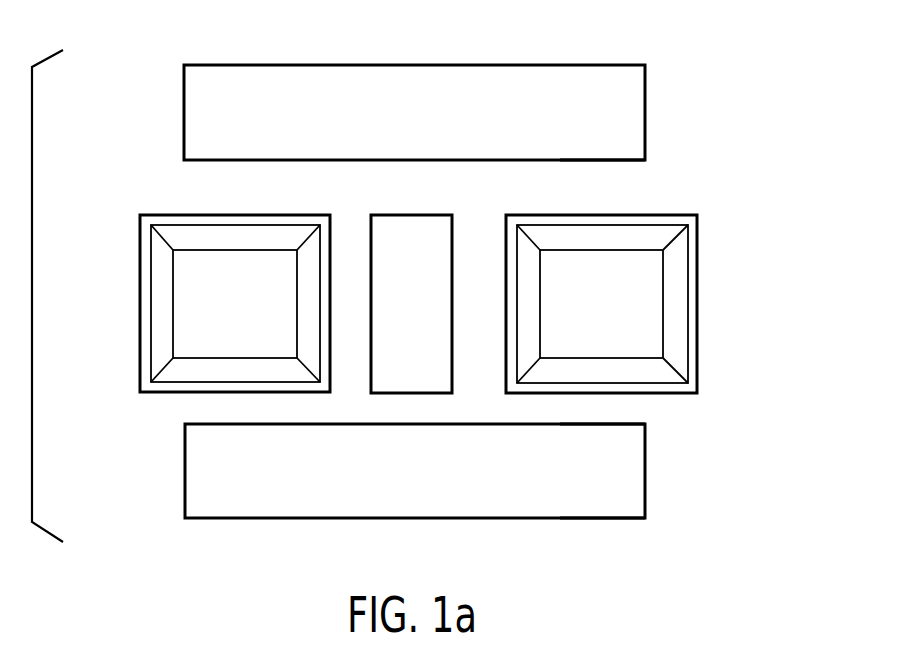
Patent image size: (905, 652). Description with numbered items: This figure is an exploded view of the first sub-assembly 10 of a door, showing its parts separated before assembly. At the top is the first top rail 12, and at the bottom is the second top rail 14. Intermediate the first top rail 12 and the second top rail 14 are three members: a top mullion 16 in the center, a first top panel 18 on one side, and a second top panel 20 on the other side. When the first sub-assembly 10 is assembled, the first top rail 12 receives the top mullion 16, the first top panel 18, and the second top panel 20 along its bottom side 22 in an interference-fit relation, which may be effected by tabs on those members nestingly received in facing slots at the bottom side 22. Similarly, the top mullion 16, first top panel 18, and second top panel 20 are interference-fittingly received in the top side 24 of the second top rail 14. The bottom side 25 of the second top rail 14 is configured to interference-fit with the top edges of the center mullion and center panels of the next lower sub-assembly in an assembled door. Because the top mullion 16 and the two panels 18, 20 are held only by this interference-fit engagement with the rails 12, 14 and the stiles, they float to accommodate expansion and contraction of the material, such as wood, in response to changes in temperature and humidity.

The first sub-assembly 10 is at (756, 255).
The first top rail 12 is at (582, 65).
The second top rail 14 is at (645, 480).
The top mullion 16 is at (425, 215).
The first top panel 18 is at (152, 282).
The second top panel 20 is at (697, 352).
The bottom side 22 is at (620, 160).
The top side 24 is at (623, 424).
The bottom side 25 is at (605, 518).